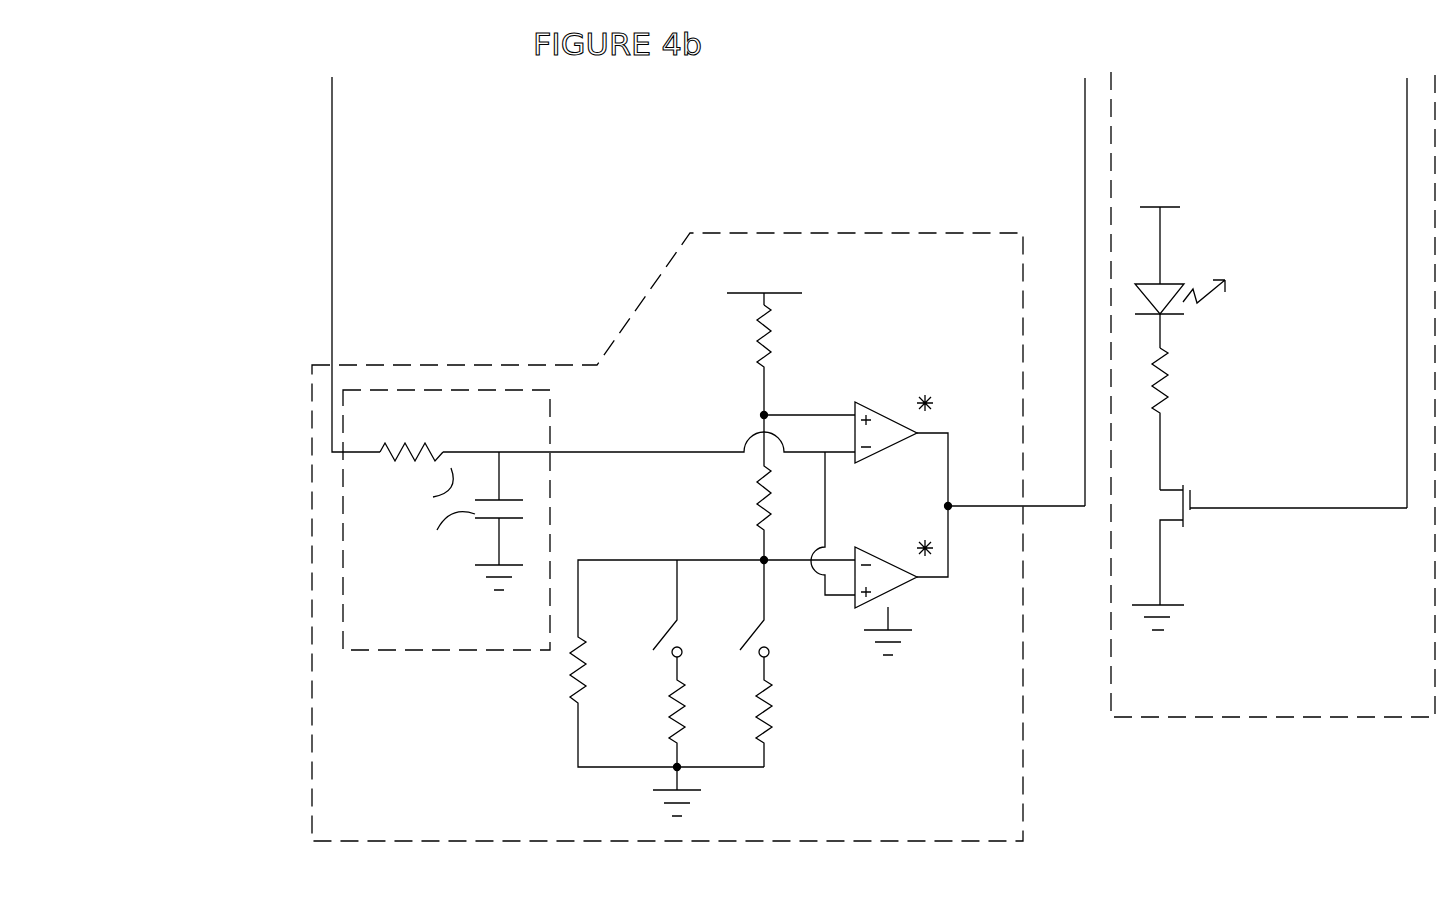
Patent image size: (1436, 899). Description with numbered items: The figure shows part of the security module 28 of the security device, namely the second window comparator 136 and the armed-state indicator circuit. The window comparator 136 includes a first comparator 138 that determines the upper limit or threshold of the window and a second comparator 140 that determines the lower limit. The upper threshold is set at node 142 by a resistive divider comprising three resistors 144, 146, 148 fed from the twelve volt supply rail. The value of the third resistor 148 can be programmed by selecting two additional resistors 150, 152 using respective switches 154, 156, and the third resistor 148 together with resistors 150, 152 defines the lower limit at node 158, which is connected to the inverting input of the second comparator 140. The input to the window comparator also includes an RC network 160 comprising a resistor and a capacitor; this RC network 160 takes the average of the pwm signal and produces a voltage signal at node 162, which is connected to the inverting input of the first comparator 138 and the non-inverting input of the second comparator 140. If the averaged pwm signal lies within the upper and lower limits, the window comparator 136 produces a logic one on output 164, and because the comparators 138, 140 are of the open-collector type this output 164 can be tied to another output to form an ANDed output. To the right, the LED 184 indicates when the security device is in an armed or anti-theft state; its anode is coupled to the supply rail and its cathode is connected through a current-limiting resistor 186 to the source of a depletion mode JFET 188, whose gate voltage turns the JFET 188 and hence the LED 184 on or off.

The security module 28 is at (258, 604).
The second window comparator 136 is at (312, 400).
The RC network 160 is at (552, 428).
The node 162 is at (505, 462).
The resistor 144 is at (783, 332).
The node 142 is at (773, 412).
The first comparator 138 is at (885, 410).
The second comparator 140 is at (887, 548).
The resistor 146 is at (750, 503).
The third resistor 148 is at (567, 670).
The additional resistor 150 is at (667, 690).
The additional resistor 152 is at (745, 697).
The switch 154 is at (660, 630).
The switch 156 is at (743, 632).
The node 158 is at (770, 565).
The output 164 is at (970, 512).
The LED 184 is at (1175, 273).
The resistor 186 is at (1170, 395).
The junction field effect transistor (JFET) 188 is at (1192, 522).